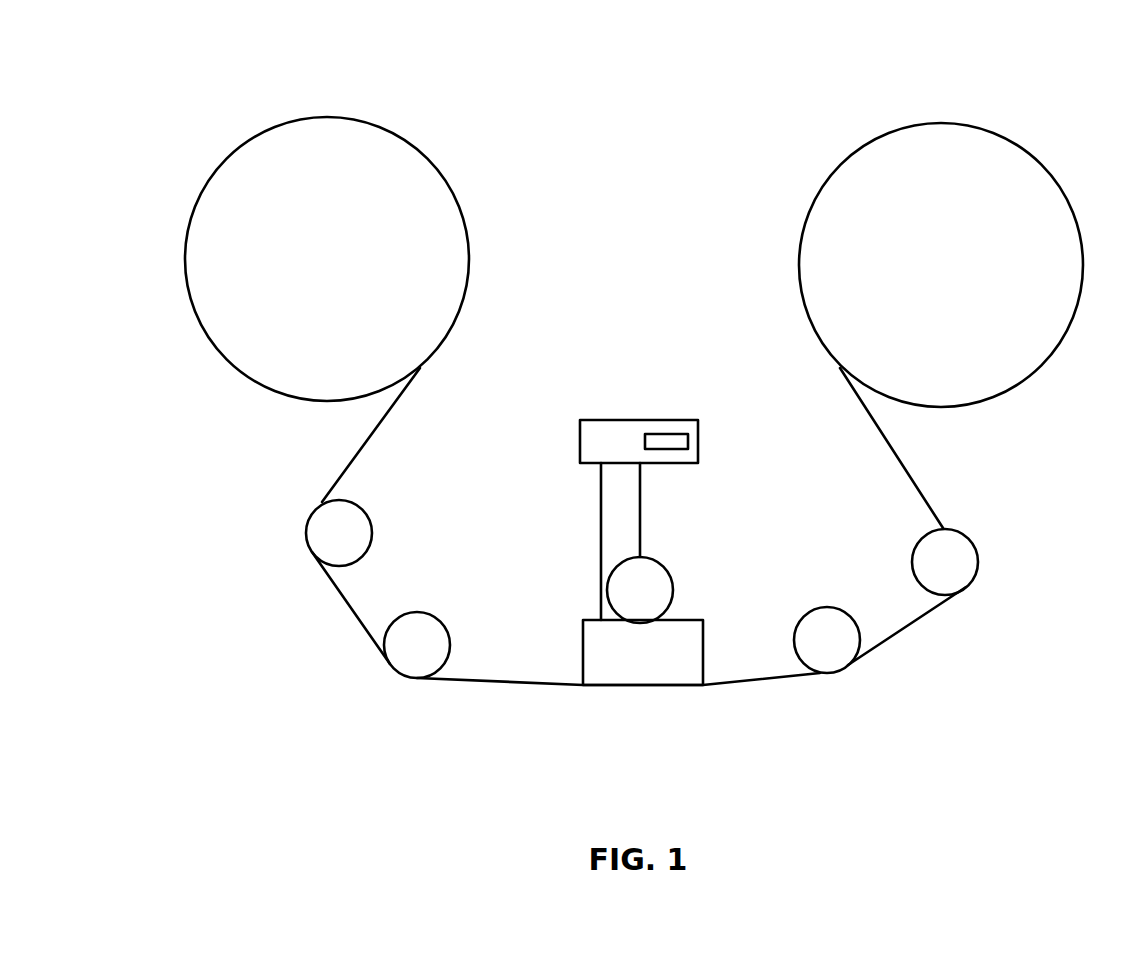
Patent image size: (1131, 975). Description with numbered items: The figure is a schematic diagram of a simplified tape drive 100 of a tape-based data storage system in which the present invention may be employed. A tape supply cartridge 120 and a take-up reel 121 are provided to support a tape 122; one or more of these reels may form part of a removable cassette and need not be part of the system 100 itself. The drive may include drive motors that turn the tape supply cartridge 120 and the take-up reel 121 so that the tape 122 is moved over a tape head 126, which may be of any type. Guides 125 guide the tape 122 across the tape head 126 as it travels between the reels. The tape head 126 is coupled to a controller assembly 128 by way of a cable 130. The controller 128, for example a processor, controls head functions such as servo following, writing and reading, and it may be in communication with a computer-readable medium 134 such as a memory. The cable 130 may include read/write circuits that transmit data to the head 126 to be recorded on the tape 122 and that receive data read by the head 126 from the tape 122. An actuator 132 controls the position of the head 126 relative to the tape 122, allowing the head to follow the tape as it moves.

The tape drive 100 is at (284, 452).
The tape supply cartridge 120 is at (465, 230).
The take-up reel 121 is at (1030, 380).
The tape 122 is at (500, 686).
The guides 125 is at (417, 610).
The tape head 126 is at (703, 648).
The controller assembly 128 is at (638, 420).
The cable 130 is at (602, 585).
The actuator 132 is at (668, 566).
The computer-readable medium 134 is at (677, 434).